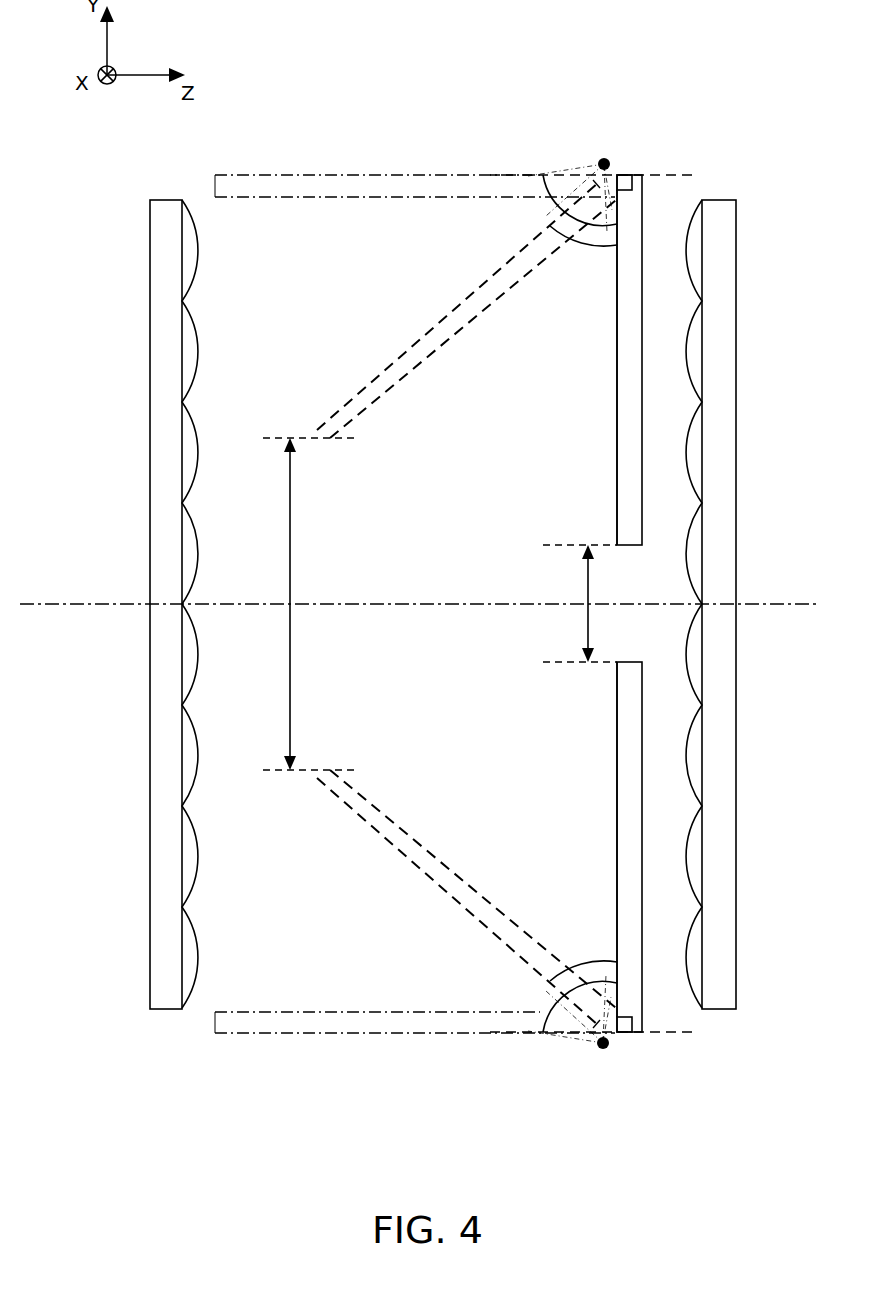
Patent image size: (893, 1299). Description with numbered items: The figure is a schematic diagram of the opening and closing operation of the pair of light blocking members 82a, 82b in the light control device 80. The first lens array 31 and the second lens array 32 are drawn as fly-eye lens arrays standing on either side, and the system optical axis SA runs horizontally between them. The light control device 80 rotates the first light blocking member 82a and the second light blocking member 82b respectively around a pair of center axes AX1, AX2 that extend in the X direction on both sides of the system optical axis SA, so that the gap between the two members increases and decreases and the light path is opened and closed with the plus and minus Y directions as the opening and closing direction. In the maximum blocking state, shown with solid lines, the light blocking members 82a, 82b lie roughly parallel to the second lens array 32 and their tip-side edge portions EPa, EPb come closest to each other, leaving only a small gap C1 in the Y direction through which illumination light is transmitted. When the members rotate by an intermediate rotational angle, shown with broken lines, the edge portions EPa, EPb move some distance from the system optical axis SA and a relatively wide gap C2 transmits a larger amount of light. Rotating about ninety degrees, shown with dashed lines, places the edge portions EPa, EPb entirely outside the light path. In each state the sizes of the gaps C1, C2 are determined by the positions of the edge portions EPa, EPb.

The first lens array 31 is at (172, 216).
The second lens array 32 is at (720, 216).
The light control device 80 is at (447, 155).
The first light blocking member 82a is at (383, 186).
The second light blocking member 82b is at (620, 800).
The center axis AX1 is at (598, 163).
The center axis AX2 is at (597, 1045).
The edge portion EPa is at (218, 186).
The edge portion EPb is at (313, 778).
The reflecting surface SS is at (510, 262).
The system optical axis SA is at (437, 606).
The small gap C1 is at (584, 548).
The relatively wide gap C2 is at (285, 768).